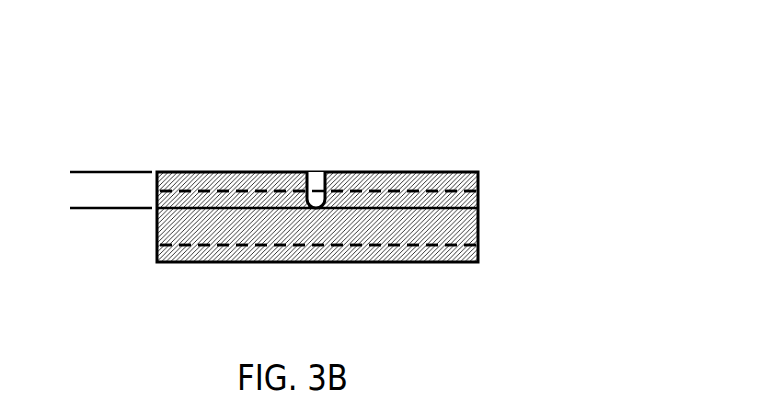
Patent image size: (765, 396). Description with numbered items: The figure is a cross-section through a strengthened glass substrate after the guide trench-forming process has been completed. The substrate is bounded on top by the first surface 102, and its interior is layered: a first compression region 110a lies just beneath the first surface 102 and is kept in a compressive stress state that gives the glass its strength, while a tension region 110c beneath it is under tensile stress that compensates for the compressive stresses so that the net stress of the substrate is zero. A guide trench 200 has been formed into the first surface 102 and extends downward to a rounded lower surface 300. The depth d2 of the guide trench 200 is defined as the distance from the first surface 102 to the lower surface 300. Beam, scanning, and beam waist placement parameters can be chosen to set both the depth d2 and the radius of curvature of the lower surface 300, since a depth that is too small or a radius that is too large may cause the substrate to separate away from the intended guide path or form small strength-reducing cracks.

The first surface 102 is at (195, 164).
The first compression region 110a is at (474, 180).
The tension region 110c is at (462, 223).
The guide trench 200 is at (325, 165).
The lower surface 300 is at (314, 196).
The depth of the guide trench d2 is at (81, 138).